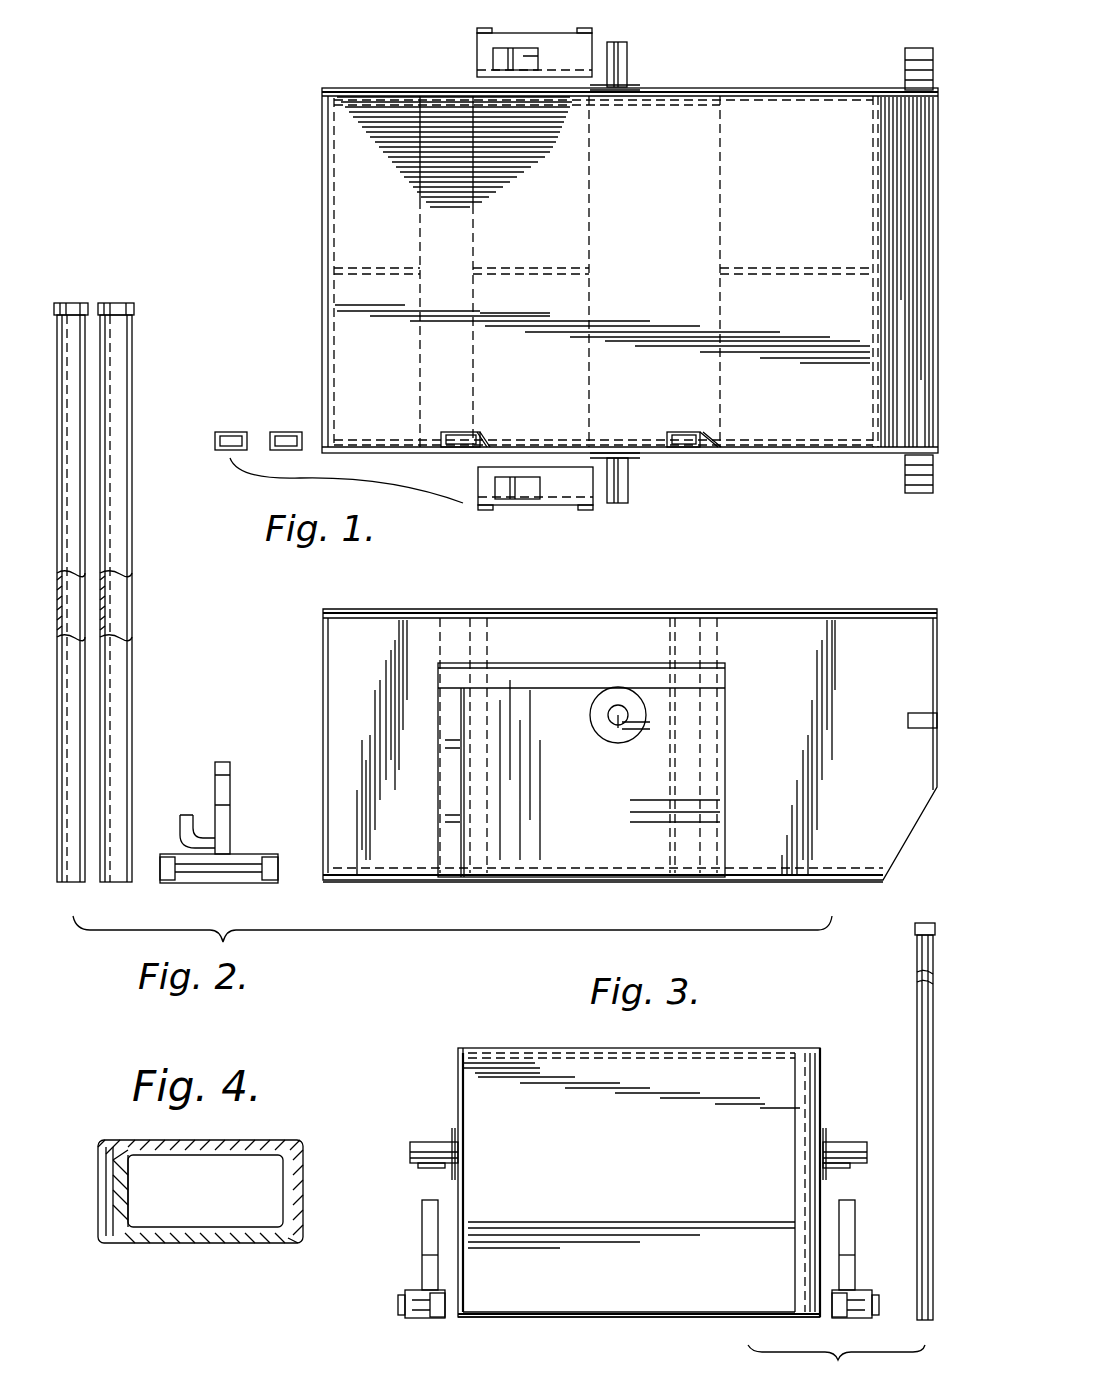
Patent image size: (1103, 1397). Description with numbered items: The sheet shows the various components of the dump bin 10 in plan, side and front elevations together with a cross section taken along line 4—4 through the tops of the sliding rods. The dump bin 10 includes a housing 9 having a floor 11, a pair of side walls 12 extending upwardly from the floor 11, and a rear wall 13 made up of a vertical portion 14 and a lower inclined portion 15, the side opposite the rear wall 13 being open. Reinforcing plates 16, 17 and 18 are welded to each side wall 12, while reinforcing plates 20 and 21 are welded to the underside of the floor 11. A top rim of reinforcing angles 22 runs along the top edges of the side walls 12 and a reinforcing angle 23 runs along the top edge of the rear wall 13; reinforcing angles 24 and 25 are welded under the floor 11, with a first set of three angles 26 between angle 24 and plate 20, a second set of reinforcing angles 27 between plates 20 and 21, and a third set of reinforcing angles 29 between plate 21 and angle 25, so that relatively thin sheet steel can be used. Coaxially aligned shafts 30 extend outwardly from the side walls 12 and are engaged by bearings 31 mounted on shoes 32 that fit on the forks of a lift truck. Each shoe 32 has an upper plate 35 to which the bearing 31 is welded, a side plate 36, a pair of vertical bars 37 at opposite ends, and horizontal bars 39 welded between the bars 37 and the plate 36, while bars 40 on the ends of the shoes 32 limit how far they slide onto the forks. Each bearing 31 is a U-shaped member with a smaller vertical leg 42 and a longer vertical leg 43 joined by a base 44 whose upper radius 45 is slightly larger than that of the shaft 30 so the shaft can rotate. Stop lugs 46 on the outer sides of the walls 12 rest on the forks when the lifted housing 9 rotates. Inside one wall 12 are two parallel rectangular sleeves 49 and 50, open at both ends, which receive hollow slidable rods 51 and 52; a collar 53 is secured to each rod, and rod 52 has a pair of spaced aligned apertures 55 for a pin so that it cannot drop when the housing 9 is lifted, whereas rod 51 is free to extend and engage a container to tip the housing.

In FIG. 2, the section line 4— 4 is at (95, 298).
In FIG. 1, the housing 9 is at (322, 166).
In FIG. 2, the housing 9 is at (323, 615).
In FIG. 3, the housing 9 is at (750, 1048).
In FIG. 1, the dump bin 10 is at (282, 127).
In FIG. 2, the dump bin 10 is at (305, 665).
In FIG. 3, the dump bin 10 is at (440, 1068).
In FIG. 1, the floor 11 is at (662, 270).
In FIG. 3, the floor 11 is at (565, 1317).
In FIG. 1, the side walls 12 is at (650, 100).
In FIG. 2, the side walls 12 is at (862, 625).
In FIG. 3, the side walls 12 is at (465, 1095).
In FIG. 1, the rear wall 13 is at (905, 290).
In FIG. 2, the rear wall 13 is at (935, 668).
In FIG. 3, the rear wall 13 is at (633, 1147).
In FIG. 1, the vertical portion 14 is at (938, 252).
In FIG. 2, the vertical portion 14 is at (940, 655).
In FIG. 1, the lower inclined portion 15 is at (920, 405).
In FIG. 2, the lower inclined portion 15 is at (905, 830).
In FIG. 3, the lower inclined portion 15 is at (650, 1225).
In FIG. 2, the reinforcing plate 16 is at (727, 675).
In FIG. 3, the reinforcing plate 16 is at (455, 1105).
In FIG. 2, the reinforcing plate 17 is at (510, 665).
In FIG. 3, the reinforcing plate 17 is at (545, 1055).
In FIG. 2, the reinforcing plate 18 is at (440, 730).
In FIG. 1, the reinforcing plate 20 is at (480, 225).
In FIG. 2, the reinforcing plate 20 is at (455, 882).
In FIG. 1, the reinforcing plate 21 is at (720, 185).
In FIG. 2, the reinforcing plate 21 is at (640, 882).
In FIG. 1, the top rim reinforcing angles 22 is at (757, 90).
In FIG. 2, the top rim reinforcing angles 22 is at (755, 610).
In FIG. 3, the top rim reinforcing angles 22 is at (455, 1050).
In FIG. 1, the reinforcing angle 23 is at (938, 330).
In FIG. 2, the reinforcing angle 23 is at (940, 612).
In FIG. 3, the reinforcing angle 23 is at (590, 1060).
In FIG. 1, the reinforcing angle 24 is at (330, 193).
In FIG. 2, the reinforcing angle 24 is at (330, 882).
In FIG. 3, the reinforcing angle 24 is at (600, 1320).
In FIG. 1, the reinforcing angle 25 is at (873, 130).
In FIG. 2, the reinforcing angle 25 is at (890, 880).
In FIG. 1, the first set of angles 26 is at (375, 102).
In FIG. 2, the first set of angles 26 is at (385, 882).
In FIG. 3, the first set of angles 26 is at (480, 1317).
In FIG. 1, the second set of reinforcing angles 27 is at (590, 140).
In FIG. 2, the second set of reinforcing angles 27 is at (540, 882).
In FIG. 1, the third set of reinforcing angles 29 is at (775, 100).
In FIG. 2, the third set of reinforcing angles 29 is at (765, 882).
In FIG. 1, the shafts 30 is at (627, 55).
In FIG. 2, the shafts 30 is at (615, 740).
In FIG. 3, the shafts 30 is at (430, 1145).
In FIG. 1, the bearings 31 is at (545, 88).
In FIG. 2, the bearings 31 is at (230, 795).
In FIG. 3, the bearings 31 is at (422, 1232).
In FIG. 1, the shoes 32 is at (477, 42).
In FIG. 2, the shoes 32 is at (278, 856).
In FIG. 3, the shoes 32 is at (398, 1300).
In FIG. 1, the upper plate 35 is at (505, 546).
In FIG. 2, the upper plate 35 is at (235, 854).
In FIG. 3, the upper plate 35 is at (410, 1285).
In FIG. 1, the side plate 36 is at (590, 96).
In FIG. 2, the side plate 36 is at (215, 883).
In FIG. 3, the side plate 36 is at (455, 1318).
In FIG. 1, the vertical bars 37 is at (480, 32).
In FIG. 2, the vertical bars 37 is at (278, 866).
In FIG. 3, the vertical bars 37 is at (398, 1310).
In FIG. 1, the horizontal bars 39 is at (477, 70).
In FIG. 2, the horizontal bars 39 is at (178, 883).
In FIG. 3, the horizontal bars 39 is at (415, 1320).
In FIG. 1, the bars 40 is at (477, 75).
In FIG. 2, the bars 40 is at (222, 832).
In FIG. 3, the bars 40 is at (634, 1290).
In FIG. 1, the smaller vertical leg 42 is at (503, 477).
In FIG. 2, the smaller vertical leg 42 is at (187, 815).
In FIG. 3, the smaller vertical leg 42 is at (422, 1255).
In FIG. 1, the longer vertical leg 43 is at (565, 477).
In FIG. 2, the longer vertical leg 43 is at (230, 765).
In FIG. 3, the longer vertical leg 43 is at (422, 1210).
In FIG. 2, the base 44 is at (238, 840).
In FIG. 1, the radius 45 is at (518, 72).
In FIG. 2, the radius 45 is at (205, 838).
In FIG. 1, the stop lugs 46 is at (905, 60).
In FIG. 2, the stop lugs 46 is at (915, 725).
In FIG. 3, the stop lugs 46 is at (420, 1165).
In FIG. 1, the sleeve 49 is at (455, 432).
In FIG. 2, the sleeve 49 is at (425, 625).
In FIG. 3, the sleeve 49 is at (795, 1142).
In FIG. 1, the sleeve 50 is at (683, 432).
In FIG. 2, the sleeve 50 is at (655, 625).
In FIG. 1, the slidable rod 51 is at (228, 432).
In FIG. 2, the slidable rod 51 is at (72, 882).
In FIG. 3, the slidable rod 51 is at (917, 990).
In FIG. 1, the slidable rod 52 is at (287, 432).
In FIG. 2, the slidable rod 52 is at (116, 882).
In FIG. 4, the slidable rod 52 is at (205, 1243).
In FIG. 1, the collar 53 is at (248, 432).
In FIG. 2, the collar 53 is at (55, 303).
In FIG. 3, the collar 53 is at (915, 928).
In FIG. 4, the collar 53 is at (150, 1243).
In FIG. 2, the apertures 55 is at (115, 595).